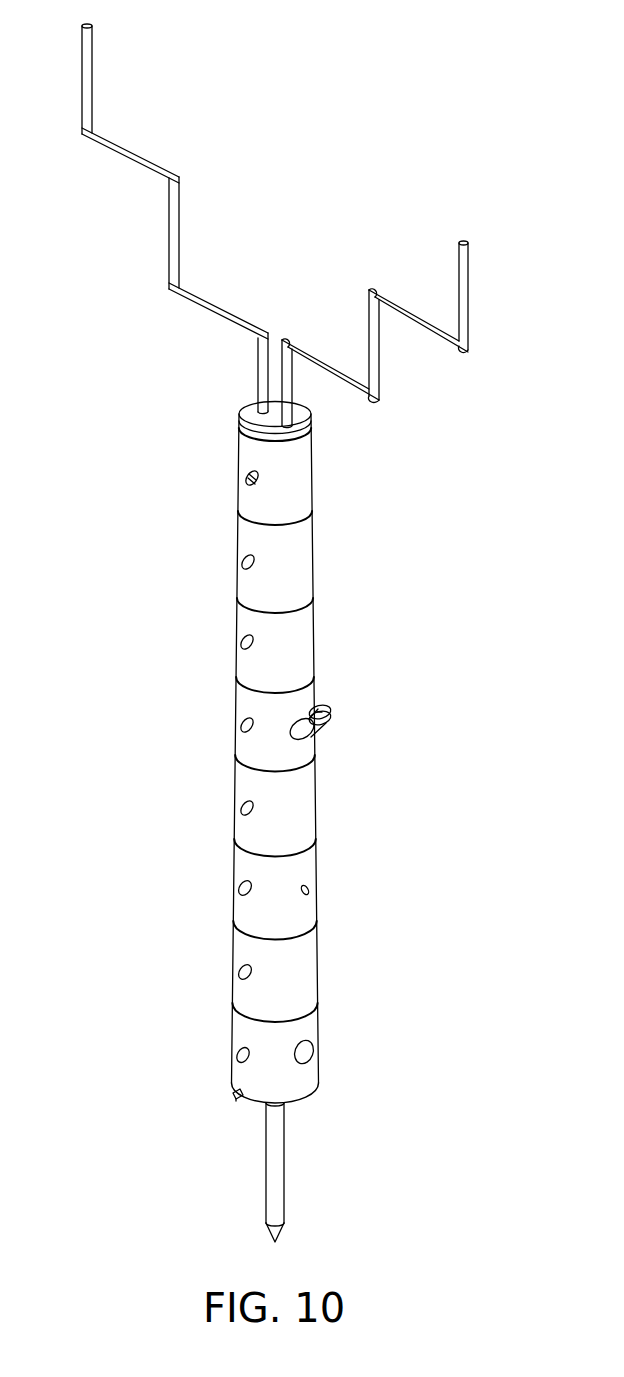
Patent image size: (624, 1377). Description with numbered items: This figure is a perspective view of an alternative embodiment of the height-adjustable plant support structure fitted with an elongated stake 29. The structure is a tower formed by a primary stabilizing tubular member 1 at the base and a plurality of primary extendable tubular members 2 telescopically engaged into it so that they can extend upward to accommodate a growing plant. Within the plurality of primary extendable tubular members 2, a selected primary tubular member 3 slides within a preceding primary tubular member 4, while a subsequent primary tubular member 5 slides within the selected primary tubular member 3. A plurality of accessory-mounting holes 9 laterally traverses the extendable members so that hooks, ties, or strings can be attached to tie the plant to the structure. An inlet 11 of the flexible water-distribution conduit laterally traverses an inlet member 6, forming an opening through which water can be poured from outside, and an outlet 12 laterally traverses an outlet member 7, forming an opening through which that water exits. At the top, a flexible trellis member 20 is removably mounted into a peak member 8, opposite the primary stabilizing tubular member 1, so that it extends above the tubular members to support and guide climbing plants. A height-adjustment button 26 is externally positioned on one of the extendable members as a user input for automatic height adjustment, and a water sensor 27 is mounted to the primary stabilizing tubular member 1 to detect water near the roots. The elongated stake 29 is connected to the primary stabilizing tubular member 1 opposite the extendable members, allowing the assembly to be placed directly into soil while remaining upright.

The primary stabilizing tubular member 1 is at (307, 1087).
The plurality of primary extendable tubular members 2 is at (156, 756).
The selected primary tubular member 3 is at (244, 701).
The preceding primary tubular member 4 is at (245, 611).
The subsequent primary tubular member 5 is at (245, 538).
The inlet member 6 is at (306, 745).
The outlet member 7 is at (241, 1083).
The peak member 8 is at (300, 460).
The plurality of accessory-mounting holes 9 is at (239, 887).
The inlet 11 is at (323, 704).
The outlet 12 is at (305, 1051).
The flexible trellis member 20 is at (467, 262).
The height-adjustment button 26 is at (310, 889).
The water sensor 27 is at (237, 1057).
The elongated stake 29 is at (277, 1160).